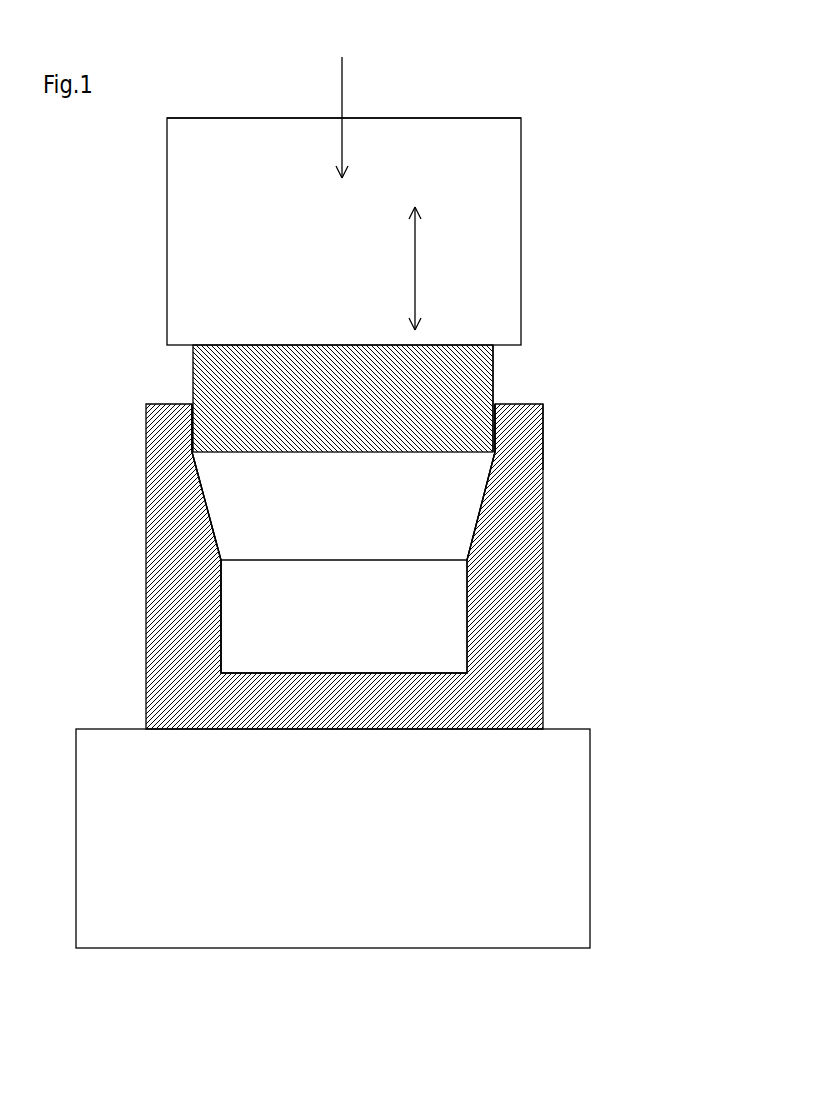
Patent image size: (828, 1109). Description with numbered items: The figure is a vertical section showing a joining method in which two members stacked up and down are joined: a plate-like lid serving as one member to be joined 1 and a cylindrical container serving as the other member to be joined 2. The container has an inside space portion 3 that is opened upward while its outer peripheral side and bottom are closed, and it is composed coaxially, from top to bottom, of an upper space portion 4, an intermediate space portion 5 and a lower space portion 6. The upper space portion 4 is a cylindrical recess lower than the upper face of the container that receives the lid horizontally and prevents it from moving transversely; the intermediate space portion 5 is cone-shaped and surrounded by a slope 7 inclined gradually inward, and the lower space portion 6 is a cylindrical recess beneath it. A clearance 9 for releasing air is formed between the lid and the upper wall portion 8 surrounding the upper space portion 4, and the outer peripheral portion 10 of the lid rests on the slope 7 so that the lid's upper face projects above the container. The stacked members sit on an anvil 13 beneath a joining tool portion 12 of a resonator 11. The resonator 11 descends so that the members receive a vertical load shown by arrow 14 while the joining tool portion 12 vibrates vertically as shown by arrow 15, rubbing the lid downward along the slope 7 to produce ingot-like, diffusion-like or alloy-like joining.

The one member to be joined 1 is at (193, 375).
The other member to be joined 2 is at (145, 412).
The inside space portion 3 is at (95, 418).
The upper space portion 4 is at (190, 432).
The intermediate space portion 5 is at (225, 516).
The lower space portion 6 is at (238, 598).
The slope 7 is at (480, 508).
The upper wall portion 8 is at (541, 415).
The clearance 9 is at (493, 402).
The outer peripheral portion 10 is at (495, 427).
The resonator 11 is at (487, 118).
The joining tool portion 12 is at (506, 316).
The anvil 13 is at (578, 879).
The arrow 14 is at (343, 80).
The arrow 15 is at (415, 255).